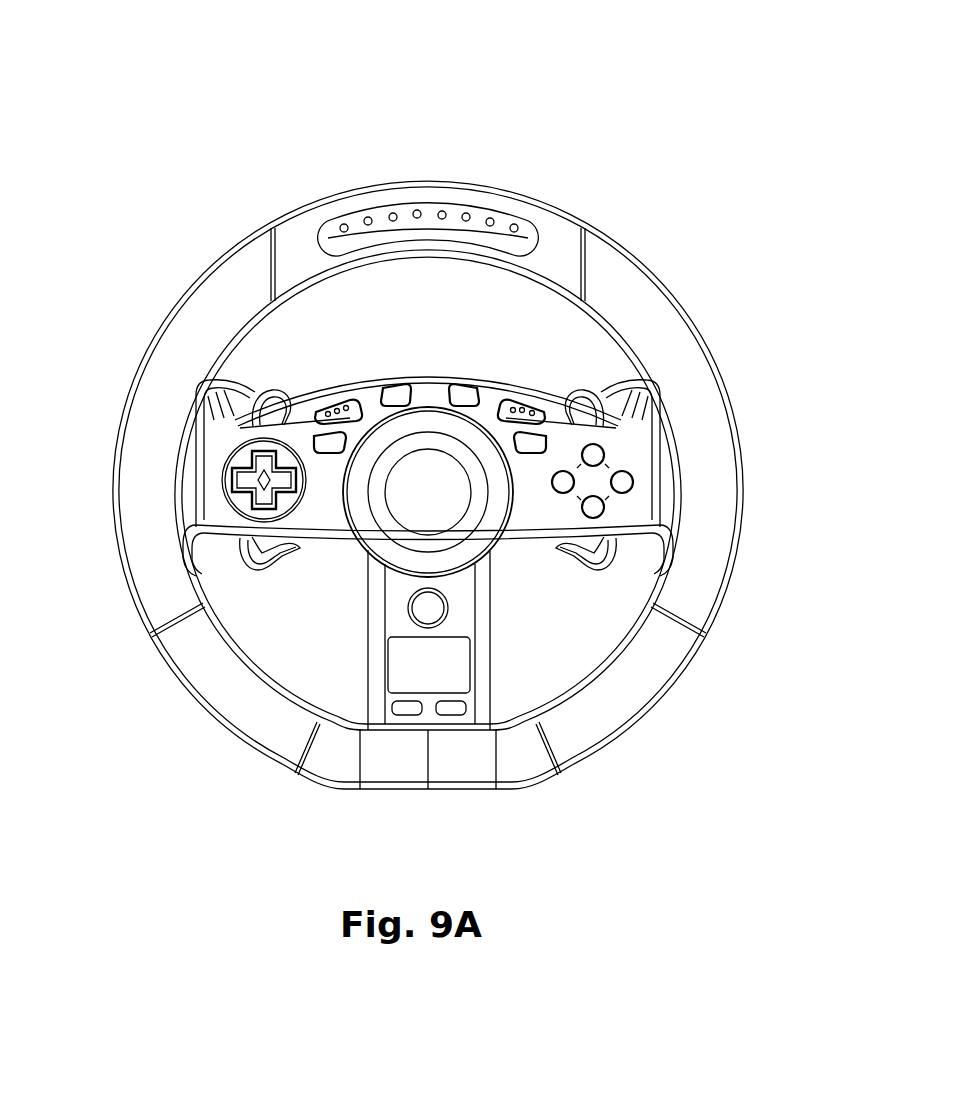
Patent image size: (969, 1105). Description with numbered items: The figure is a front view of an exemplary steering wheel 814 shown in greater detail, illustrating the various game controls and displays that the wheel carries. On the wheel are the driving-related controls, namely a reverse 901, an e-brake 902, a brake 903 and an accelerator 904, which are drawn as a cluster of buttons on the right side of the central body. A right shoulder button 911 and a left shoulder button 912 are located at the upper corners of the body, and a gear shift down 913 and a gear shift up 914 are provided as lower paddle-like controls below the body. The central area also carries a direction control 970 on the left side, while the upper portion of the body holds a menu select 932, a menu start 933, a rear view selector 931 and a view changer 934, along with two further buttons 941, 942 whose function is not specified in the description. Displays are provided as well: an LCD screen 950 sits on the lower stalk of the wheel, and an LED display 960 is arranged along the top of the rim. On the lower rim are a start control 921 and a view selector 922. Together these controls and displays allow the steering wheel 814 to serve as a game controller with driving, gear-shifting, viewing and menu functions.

The steering wheel 814 is at (290, 80).
The LED display 960 is at (413, 203).
The menu select 932 is at (397, 383).
The menu start 933 is at (472, 383).
The button 941 is at (350, 400).
The button 942 is at (513, 400).
The rear view selector 931 is at (322, 432).
The view changer 934 is at (530, 432).
The left shoulder button 912 is at (265, 418).
The right shoulder button 911 is at (588, 414).
The reverse 901 is at (598, 444).
The e-brake 902 is at (574, 478).
The brake 903 is at (634, 480).
The accelerator 904 is at (604, 512).
The direction control 970 is at (232, 455).
The gear shift up 914 is at (252, 562).
The gear shift down 913 is at (606, 562).
The LCD screen 950 is at (472, 658).
The view selector 922 is at (388, 703).
The start control 921 is at (583, 690).